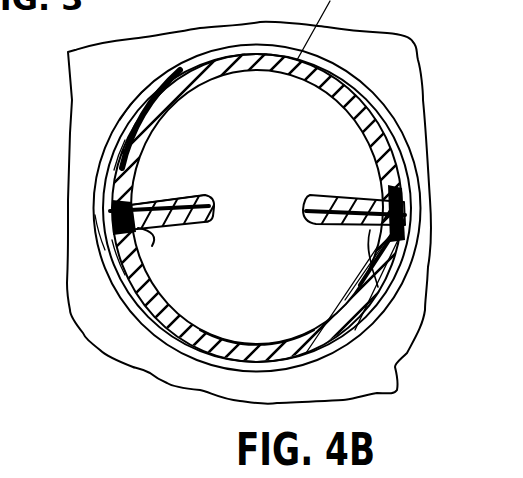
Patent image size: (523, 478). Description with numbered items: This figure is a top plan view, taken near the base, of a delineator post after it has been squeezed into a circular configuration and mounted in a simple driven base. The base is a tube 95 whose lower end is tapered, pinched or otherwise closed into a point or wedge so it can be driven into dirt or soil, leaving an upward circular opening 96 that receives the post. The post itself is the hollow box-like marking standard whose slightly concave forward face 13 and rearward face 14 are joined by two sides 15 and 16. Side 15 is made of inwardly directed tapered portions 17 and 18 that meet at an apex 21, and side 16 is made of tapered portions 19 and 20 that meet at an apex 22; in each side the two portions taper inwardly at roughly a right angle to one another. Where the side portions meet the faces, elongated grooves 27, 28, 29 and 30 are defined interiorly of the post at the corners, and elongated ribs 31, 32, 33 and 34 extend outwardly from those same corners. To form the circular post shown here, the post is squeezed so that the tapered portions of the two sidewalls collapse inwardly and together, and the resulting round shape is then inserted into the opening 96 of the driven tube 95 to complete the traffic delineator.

The forward face 13 is at (262, 68).
The rearward face 14 is at (267, 357).
The side 15 is at (187, 172).
The side 16 is at (325, 250).
The tapered portion 17 is at (183, 195).
The tapered portion 18 is at (176, 228).
The tapered portion 19 is at (346, 197).
The tapered portion 20 is at (351, 232).
The apex 21 is at (213, 207).
The apex 22 is at (311, 226).
The elongated groove 27 is at (132, 196).
The elongated groove 28 is at (133, 257).
The elongated groove 29 is at (370, 190).
The elongated groove 30 is at (383, 318).
The elongated rib 31 is at (112, 200).
The elongated rib 32 is at (110, 219).
The elongated rib 33 is at (404, 200).
The elongated rib 34 is at (412, 230).
The tube 95 is at (137, 107).
The circular opening 96 is at (117, 162).